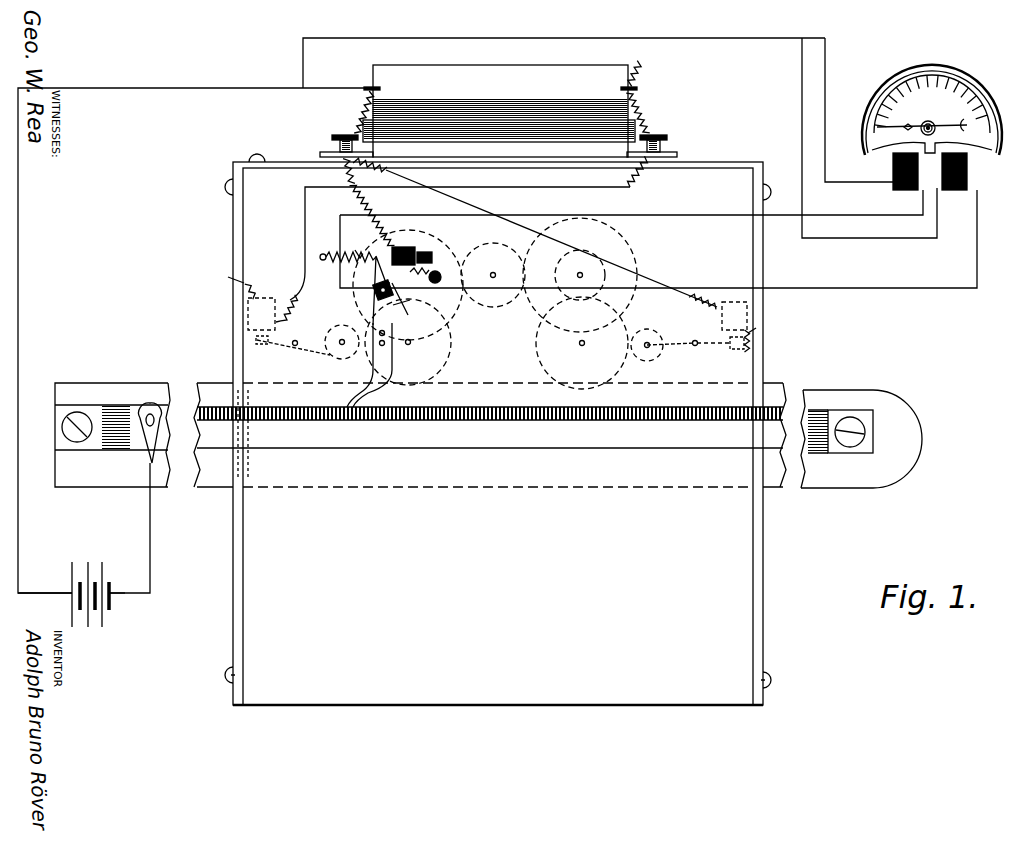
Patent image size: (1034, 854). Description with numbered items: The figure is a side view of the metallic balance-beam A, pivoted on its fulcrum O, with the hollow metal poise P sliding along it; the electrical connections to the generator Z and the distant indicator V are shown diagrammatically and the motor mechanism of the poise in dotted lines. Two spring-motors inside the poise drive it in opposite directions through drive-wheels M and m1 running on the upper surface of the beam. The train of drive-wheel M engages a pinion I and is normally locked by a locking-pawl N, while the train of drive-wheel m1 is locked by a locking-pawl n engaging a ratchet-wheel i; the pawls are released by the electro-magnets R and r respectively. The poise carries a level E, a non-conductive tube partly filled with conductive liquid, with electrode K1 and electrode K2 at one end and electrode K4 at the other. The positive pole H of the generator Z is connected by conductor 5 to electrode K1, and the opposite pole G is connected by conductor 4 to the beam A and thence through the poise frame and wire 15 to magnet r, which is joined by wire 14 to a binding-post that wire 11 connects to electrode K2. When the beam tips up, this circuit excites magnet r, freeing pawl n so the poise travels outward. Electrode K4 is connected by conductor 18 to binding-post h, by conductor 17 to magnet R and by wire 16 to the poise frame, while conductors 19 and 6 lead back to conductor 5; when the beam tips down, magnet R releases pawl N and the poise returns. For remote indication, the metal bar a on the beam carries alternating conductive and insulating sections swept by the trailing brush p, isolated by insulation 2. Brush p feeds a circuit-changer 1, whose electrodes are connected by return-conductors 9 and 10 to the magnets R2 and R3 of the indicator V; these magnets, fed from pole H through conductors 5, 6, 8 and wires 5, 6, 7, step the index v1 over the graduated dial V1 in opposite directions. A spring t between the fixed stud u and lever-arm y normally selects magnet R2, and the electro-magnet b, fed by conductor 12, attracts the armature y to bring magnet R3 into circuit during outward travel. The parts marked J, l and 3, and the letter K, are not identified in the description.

The poise P is at (498, 429).
The receptacle or level E is at (498, 111).
The electrode K2 is at (366, 79).
The electrode K4 is at (640, 88).
The electrode K1 is at (338, 144).
The binding-post h is at (663, 145).
The wire 11 is at (357, 112).
The conductor 18 is at (645, 113).
The conductor 19 is at (661, 42).
The conductor 5 is at (195, 331).
The conductor 6 is at (564, 53).
The wire 7 is at (869, 138).
The conductor 8 is at (859, 110).
The return-conductor 9 is at (631, 202).
The return-conductor 10 is at (658, 249).
The conductor 17 is at (461, 239).
The conductor 12 is at (368, 202).
The wire 14 is at (535, 232).
The drive-wheel m1 is at (582, 343).
The ratchet-wheel i is at (647, 346).
The locking-pawl n is at (666, 354).
The magnet r is at (734, 316).
The contact spring J is at (750, 350).
The wire 15 is at (754, 332).
The electro-magnet b is at (412, 247).
The armature weight l is at (439, 277).
The spring 3 is at (419, 277).
The fixed stud u is at (344, 249).
The circuit-changer 1 is at (408, 285).
The spring t is at (353, 245).
The lever-arm y is at (386, 290).
The insulation 2 is at (403, 302).
The pinion I is at (342, 338).
The drive-wheel M is at (408, 342).
The locking-pawl N is at (293, 353).
The trailing contact or brush p is at (369, 365).
The electro-magnet R is at (261, 314).
The wire 16 is at (255, 284).
The switch K is at (228, 276).
The metal bar a is at (490, 435).
The fulcrum O is at (112, 435).
The scale or balance-beam A is at (861, 439).
The electric generator Z is at (90, 582).
The conductor 4 is at (140, 528).
The positive pole H is at (42, 605).
The opposite pole G is at (131, 605).
The electrical indicator V is at (932, 95).
The dial V1 is at (932, 104).
The index v1 is at (922, 123).
The electro-magnet R2 is at (893, 171).
The electro-magnet R3 is at (968, 170).